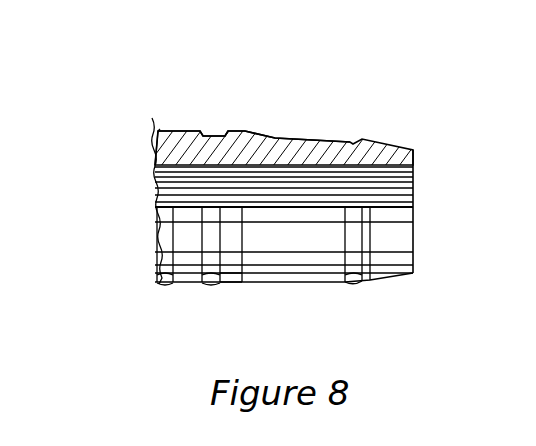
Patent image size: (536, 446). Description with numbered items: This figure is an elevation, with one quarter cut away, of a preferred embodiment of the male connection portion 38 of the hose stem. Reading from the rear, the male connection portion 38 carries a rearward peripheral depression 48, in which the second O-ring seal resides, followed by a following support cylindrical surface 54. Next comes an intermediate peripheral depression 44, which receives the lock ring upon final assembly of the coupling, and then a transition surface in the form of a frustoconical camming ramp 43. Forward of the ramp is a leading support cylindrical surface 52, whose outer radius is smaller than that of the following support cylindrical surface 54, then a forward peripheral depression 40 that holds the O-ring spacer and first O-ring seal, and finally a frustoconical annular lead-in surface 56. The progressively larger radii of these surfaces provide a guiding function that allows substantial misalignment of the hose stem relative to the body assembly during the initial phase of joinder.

The male connection portion 38 is at (108, 128).
The forward peripheral depression 40 is at (354, 143).
The camming ramp 43 is at (240, 284).
The intermediate peripheral depression 44 is at (207, 284).
The rearward peripheral depression 48 is at (156, 130).
The leading support cylindrical surface 52 is at (287, 136).
The following support cylindrical surface 54 is at (199, 131).
The annular lead-in surface 56 is at (383, 282).